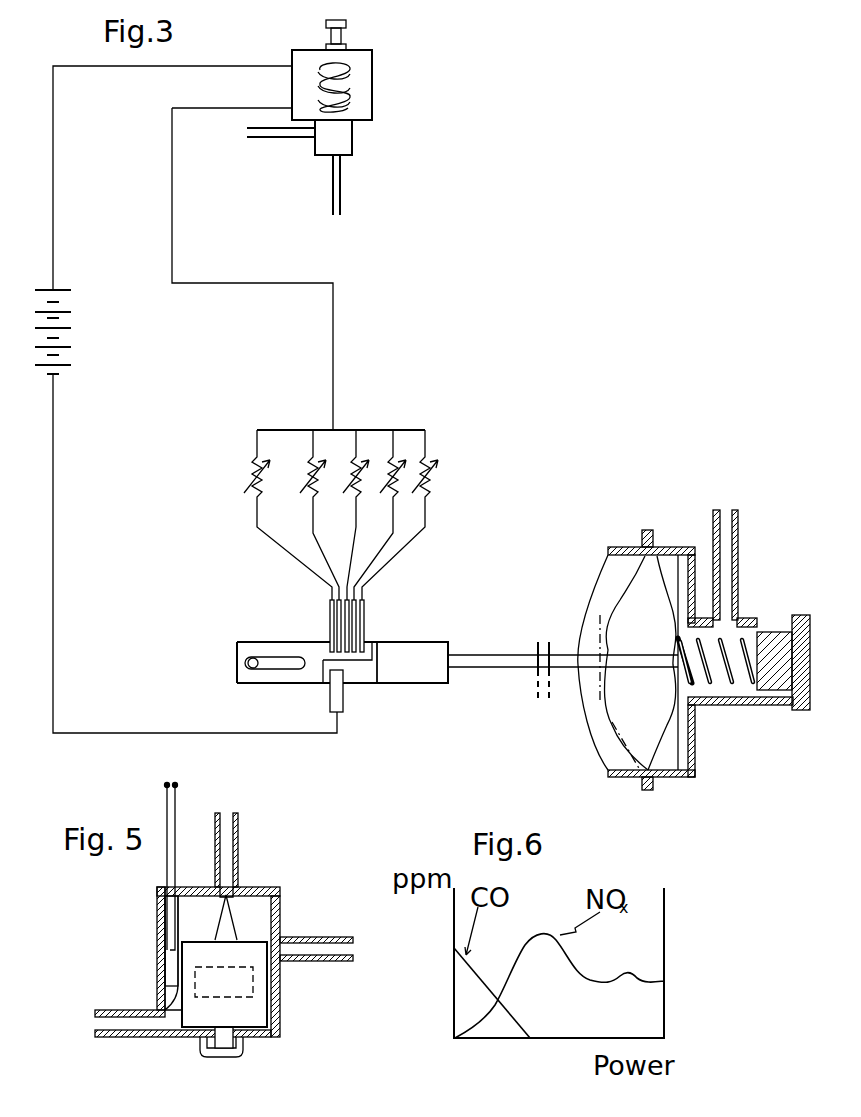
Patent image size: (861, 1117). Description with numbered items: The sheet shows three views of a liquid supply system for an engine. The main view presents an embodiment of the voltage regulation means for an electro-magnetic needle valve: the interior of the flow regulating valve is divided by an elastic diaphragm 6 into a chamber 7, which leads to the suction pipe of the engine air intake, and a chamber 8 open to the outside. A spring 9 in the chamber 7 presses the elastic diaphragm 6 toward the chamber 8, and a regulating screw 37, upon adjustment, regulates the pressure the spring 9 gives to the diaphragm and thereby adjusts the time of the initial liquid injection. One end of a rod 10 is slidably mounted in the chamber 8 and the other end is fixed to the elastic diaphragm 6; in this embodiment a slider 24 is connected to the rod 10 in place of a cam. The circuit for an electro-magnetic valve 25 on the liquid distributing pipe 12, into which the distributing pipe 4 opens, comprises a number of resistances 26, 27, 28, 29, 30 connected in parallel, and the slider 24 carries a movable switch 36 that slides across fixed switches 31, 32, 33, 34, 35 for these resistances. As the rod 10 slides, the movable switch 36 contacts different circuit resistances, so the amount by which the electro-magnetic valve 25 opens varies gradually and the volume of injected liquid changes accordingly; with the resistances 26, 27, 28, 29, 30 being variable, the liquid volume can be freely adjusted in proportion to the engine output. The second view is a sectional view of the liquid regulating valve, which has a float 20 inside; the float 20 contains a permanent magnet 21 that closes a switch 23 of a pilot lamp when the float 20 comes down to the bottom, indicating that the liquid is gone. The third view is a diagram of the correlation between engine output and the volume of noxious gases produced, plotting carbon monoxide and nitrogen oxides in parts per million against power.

In FIG. 3, the distributing pipe 4 is at (281, 139).
In FIG. 3, the elastic diaphragm 6 is at (670, 772).
In FIG. 3, the chamber 7 is at (670, 572).
In FIG. 3, the chamber 8 is at (603, 545).
In FIG. 3, the spring 9 is at (713, 703).
In FIG. 3, the rod 10 is at (565, 663).
In FIG. 3, the liquid distributing pipe 12 is at (341, 197).
In FIG. 5, the float 20 is at (247, 1013).
In FIG. 5, the permanent magnet 21 is at (253, 980).
In FIG. 5, the switch 23 is at (170, 935).
In FIG. 3, the slider 24 is at (400, 672).
In FIG. 3, the electro-magnetic valve 25 is at (355, 99).
In FIG. 3, the resistance 26 is at (254, 470).
In FIG. 3, the resistance 27 is at (309, 470).
In FIG. 3, the resistance 28 is at (350, 470).
In FIG. 3, the resistance 29 is at (396, 470).
In FIG. 3, the resistance 30 is at (430, 470).
In FIG. 3, the fixed switch 31 is at (330, 628).
In FIG. 3, the fixed switch 32 is at (326, 602).
In FIG. 3, the fixed switch 33 is at (375, 596).
In FIG. 3, the fixed switch 34 is at (354, 613).
In FIG. 3, the fixed switch 35 is at (365, 629).
In FIG. 3, the movable switch 36 is at (372, 648).
In FIG. 3, the regulating screw 37 is at (800, 711).